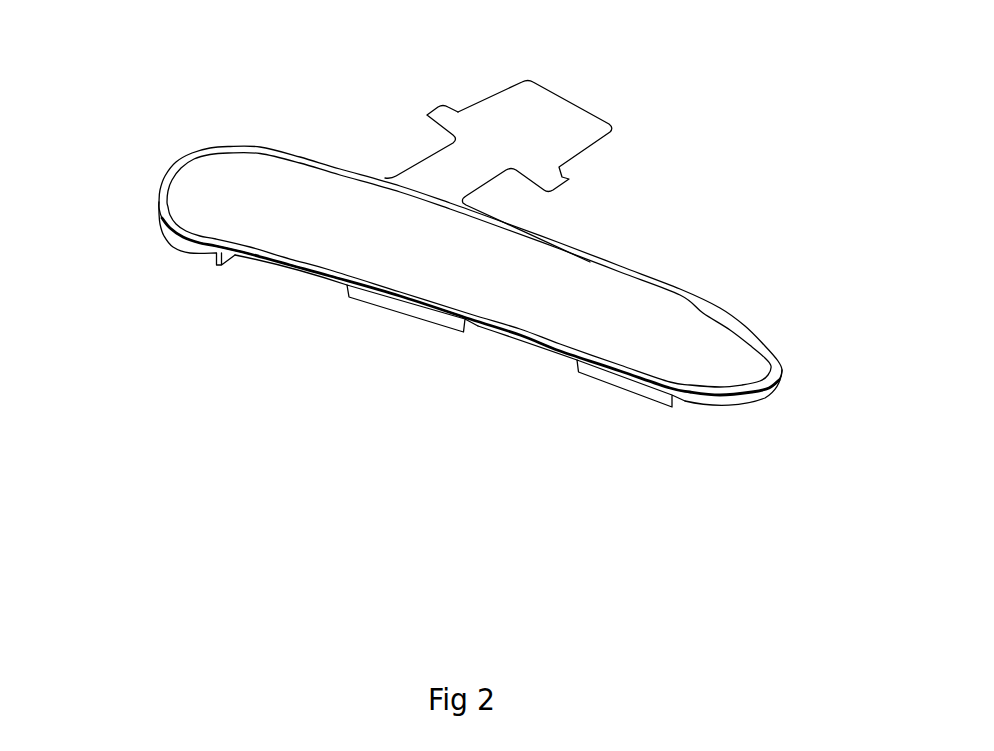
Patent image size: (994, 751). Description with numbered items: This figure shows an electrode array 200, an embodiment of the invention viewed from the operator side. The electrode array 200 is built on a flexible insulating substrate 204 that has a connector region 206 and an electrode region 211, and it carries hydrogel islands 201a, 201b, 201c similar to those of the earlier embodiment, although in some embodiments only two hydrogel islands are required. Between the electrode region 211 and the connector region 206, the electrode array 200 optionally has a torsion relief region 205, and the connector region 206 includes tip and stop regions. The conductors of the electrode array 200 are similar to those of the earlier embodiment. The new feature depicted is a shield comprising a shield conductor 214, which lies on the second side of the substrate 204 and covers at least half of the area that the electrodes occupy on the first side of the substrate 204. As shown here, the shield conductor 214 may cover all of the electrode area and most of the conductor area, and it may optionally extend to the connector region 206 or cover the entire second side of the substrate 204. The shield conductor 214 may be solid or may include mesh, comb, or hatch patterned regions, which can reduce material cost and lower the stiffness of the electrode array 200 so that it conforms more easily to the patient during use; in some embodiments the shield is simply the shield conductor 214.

The electrode array 200 is at (166, 128).
The hydrogel island 201a is at (201, 271).
The hydrogel island 201b is at (418, 318).
The hydrogel island 201c is at (653, 400).
The flexible insulating substrate 204 is at (683, 290).
The torsion relief region 205 is at (368, 156).
The connector region 206 is at (422, 116).
The electrode region 211 is at (753, 433).
The shield conductor 214 is at (587, 277).